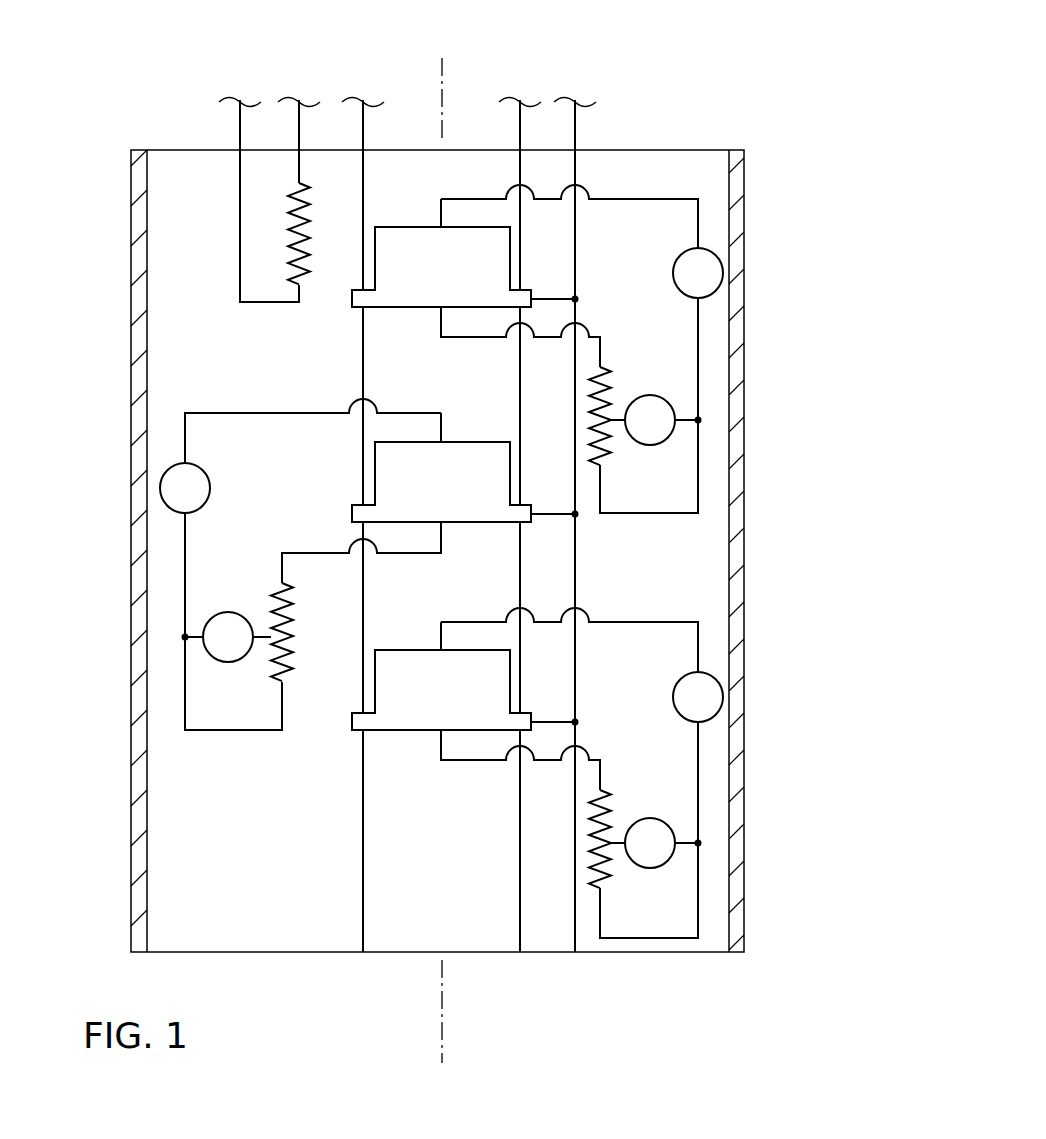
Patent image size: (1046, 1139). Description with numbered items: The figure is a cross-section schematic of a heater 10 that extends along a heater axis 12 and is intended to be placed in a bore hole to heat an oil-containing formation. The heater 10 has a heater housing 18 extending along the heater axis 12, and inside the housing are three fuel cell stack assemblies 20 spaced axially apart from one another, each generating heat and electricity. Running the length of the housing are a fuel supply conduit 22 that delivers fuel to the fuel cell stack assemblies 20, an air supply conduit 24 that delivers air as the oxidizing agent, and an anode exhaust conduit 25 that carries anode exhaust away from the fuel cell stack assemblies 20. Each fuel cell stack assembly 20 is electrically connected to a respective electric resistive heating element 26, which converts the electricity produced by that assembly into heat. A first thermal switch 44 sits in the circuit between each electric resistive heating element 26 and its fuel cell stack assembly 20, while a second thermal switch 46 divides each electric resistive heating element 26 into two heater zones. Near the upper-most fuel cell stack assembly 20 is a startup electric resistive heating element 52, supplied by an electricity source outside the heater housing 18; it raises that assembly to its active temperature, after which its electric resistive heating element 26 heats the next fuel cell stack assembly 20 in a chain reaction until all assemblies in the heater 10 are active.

The heater 10 is at (422, 531).
The heater axis 12 is at (442, 70).
The heater housing 18 is at (130, 230).
The fuel cell stack assembly 20 is at (415, 288).
The fuel supply conduit 22 is at (520, 129).
The air supply conduit 24 is at (575, 129).
The anode exhaust conduit 25 is at (363, 129).
The electric resistive heating element 26 is at (615, 382).
The first thermal switch 44 is at (716, 255).
The second thermal switch 46 is at (668, 402).
The startup electric resistive heating element 52 is at (220, 210).